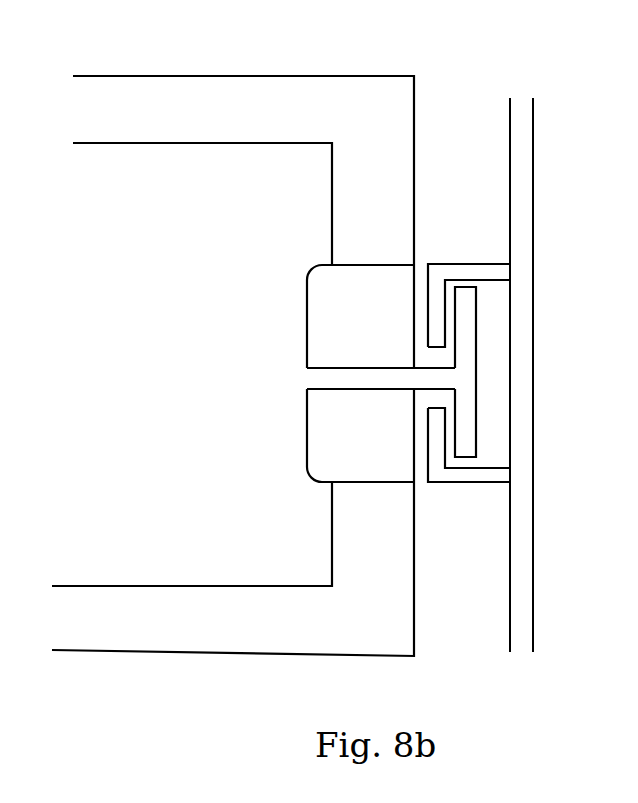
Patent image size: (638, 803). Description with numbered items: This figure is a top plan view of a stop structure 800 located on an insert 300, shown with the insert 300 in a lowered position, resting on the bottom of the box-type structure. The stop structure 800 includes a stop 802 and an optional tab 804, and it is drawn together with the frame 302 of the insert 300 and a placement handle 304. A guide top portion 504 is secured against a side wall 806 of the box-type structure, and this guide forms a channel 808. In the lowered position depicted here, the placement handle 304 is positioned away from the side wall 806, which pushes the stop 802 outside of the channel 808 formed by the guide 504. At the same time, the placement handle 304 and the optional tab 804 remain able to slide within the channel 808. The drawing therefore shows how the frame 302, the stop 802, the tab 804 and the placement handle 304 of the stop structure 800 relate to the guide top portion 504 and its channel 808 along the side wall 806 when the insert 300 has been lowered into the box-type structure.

The insert 300 is at (285, 185).
The frame 302 is at (287, 97).
The placement handle 304 is at (465, 413).
The guide top portion 504 is at (488, 273).
The stop structure 800 is at (267, 497).
The stop 802 is at (330, 350).
The tab 804 is at (340, 445).
The side wall 806 is at (518, 555).
The channel 808 is at (495, 347).